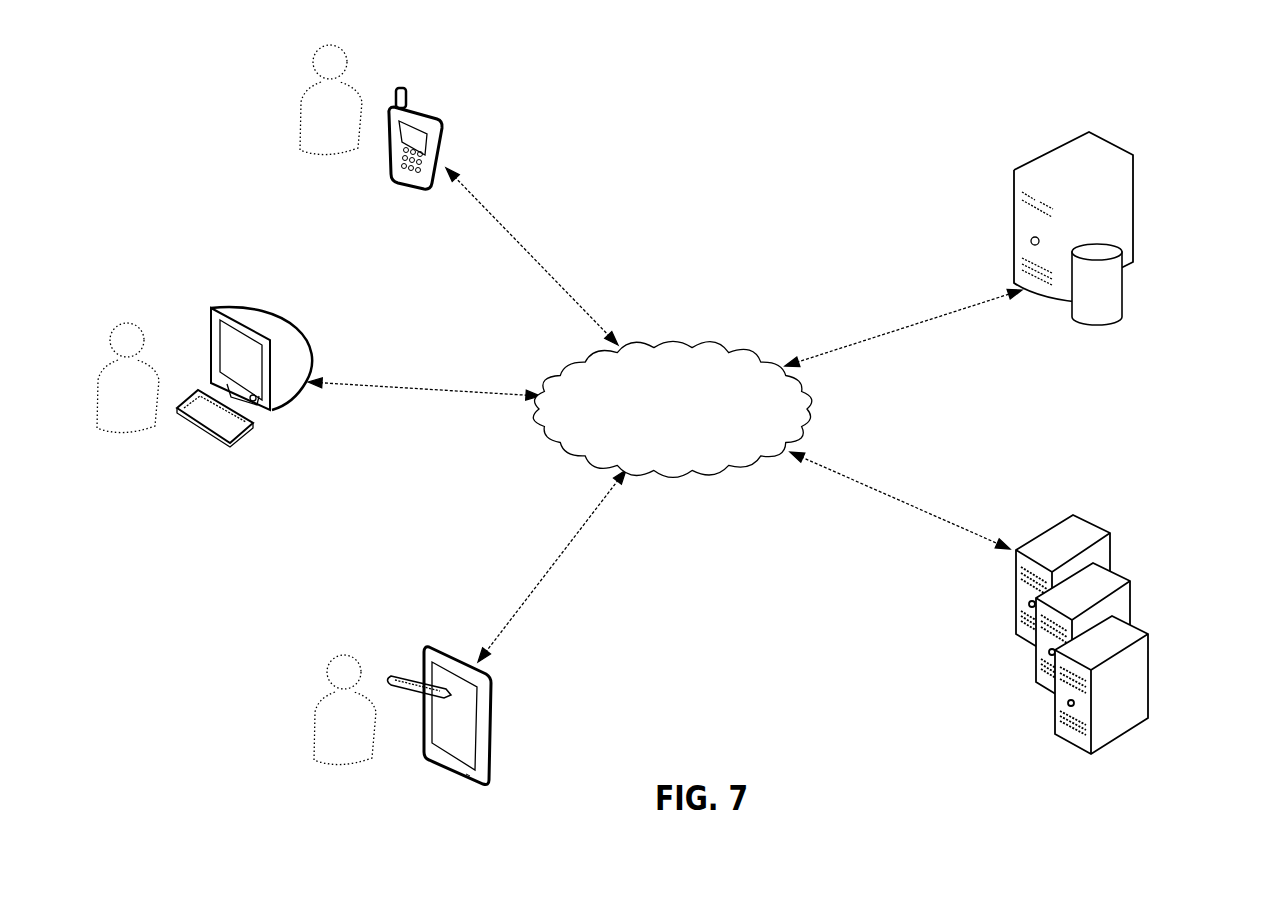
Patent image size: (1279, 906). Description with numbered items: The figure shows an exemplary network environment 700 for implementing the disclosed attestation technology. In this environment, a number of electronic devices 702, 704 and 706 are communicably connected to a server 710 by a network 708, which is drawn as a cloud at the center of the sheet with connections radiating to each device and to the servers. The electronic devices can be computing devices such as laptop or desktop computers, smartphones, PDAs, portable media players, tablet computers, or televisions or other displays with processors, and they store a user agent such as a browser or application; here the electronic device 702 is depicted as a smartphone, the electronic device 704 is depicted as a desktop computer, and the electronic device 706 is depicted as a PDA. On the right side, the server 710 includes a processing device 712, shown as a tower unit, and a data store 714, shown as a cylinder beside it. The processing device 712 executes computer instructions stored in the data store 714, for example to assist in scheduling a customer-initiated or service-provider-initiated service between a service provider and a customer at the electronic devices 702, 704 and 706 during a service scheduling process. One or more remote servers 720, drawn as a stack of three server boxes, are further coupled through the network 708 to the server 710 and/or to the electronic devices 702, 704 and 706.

The network environment 700 is at (792, 96).
The electronic device 702 is at (428, 110).
The electronic device 704 is at (310, 358).
The electronic device 706 is at (433, 645).
The network 708 is at (672, 345).
The server 710 is at (1014, 326).
The processing device 712 is at (1108, 142).
The data store 714 is at (1122, 315).
The remote servers 720 is at (1009, 724).